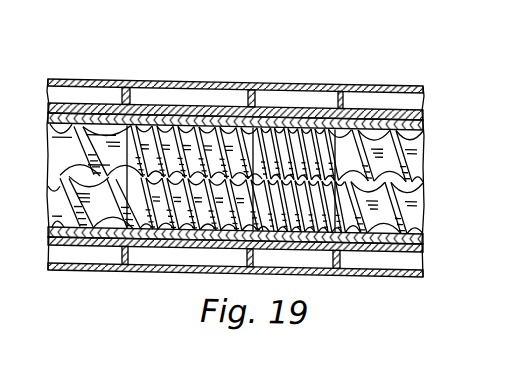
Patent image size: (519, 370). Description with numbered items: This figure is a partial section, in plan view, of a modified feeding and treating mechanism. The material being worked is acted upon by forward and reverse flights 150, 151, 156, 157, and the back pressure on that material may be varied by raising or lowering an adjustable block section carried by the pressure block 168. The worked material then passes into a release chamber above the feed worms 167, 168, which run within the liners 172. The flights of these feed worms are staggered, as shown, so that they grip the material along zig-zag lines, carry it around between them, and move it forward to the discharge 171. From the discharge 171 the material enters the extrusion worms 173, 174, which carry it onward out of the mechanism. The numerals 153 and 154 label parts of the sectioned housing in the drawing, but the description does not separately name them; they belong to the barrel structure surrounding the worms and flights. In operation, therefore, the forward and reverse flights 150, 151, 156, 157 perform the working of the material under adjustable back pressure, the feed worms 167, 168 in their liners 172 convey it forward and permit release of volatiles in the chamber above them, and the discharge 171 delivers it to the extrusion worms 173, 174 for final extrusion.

The forward flight 150 is at (256, 151).
The reverse flight 151 is at (255, 254).
The barrel wall 153 is at (85, 107).
The cooling jacket 154 is at (157, 93).
The forward flight 156 is at (268, 121).
The reverse flight 157 is at (325, 217).
The feed worm 167 is at (196, 124).
The feed worm 168 is at (178, 246).
The discharge 171 is at (62, 213).
The liners 172 is at (322, 120).
The extrusion worm 173 is at (67, 144).
The extrusion worm 174 is at (72, 198).